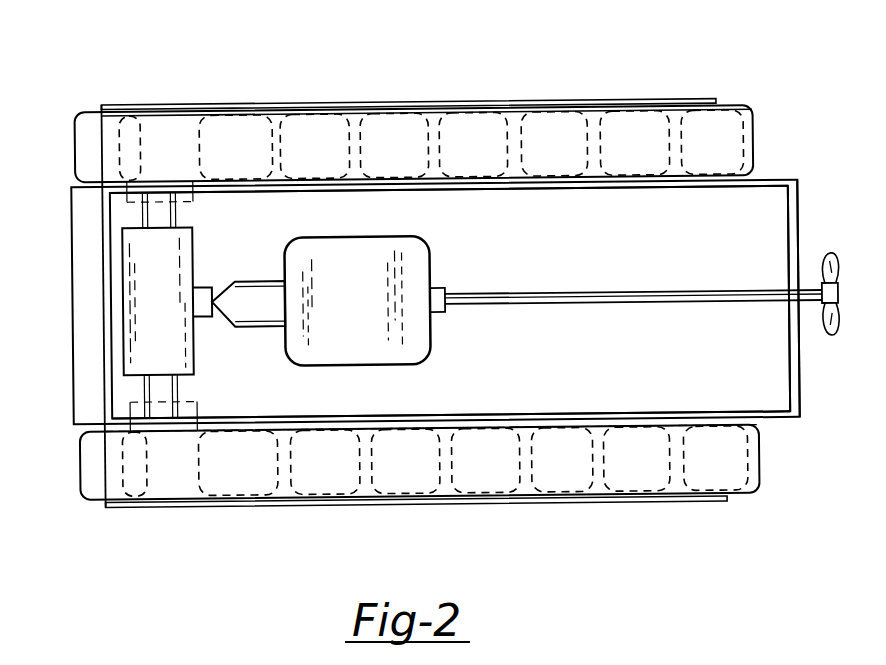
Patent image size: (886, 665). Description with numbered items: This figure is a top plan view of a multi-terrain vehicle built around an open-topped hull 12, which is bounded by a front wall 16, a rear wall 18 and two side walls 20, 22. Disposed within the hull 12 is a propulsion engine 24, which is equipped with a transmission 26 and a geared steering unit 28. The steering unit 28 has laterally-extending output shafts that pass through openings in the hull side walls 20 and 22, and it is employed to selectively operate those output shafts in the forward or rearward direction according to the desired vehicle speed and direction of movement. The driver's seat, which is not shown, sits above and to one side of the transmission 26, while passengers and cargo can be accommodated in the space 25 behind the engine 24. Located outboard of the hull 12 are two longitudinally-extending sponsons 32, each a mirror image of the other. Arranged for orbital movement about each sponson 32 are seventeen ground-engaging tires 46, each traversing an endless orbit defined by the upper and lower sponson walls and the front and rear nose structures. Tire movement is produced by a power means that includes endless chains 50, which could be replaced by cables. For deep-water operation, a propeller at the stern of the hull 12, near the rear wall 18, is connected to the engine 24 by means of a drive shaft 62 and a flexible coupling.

The open-topped hull 12 is at (798, 182).
The front wall 16 is at (73, 305).
The rear wall 18 is at (797, 389).
The side wall 20 is at (567, 190).
The side wall 22 is at (576, 414).
The propulsion engine 24 is at (370, 305).
The space 25 is at (696, 261).
The transmission 26 is at (255, 323).
The geared steering unit 28 is at (184, 252).
The sponson 32 is at (354, 101).
The ground-engaging tire 46 is at (77, 142).
The endless chain 50 is at (562, 103).
The drive shaft 62 is at (583, 305).